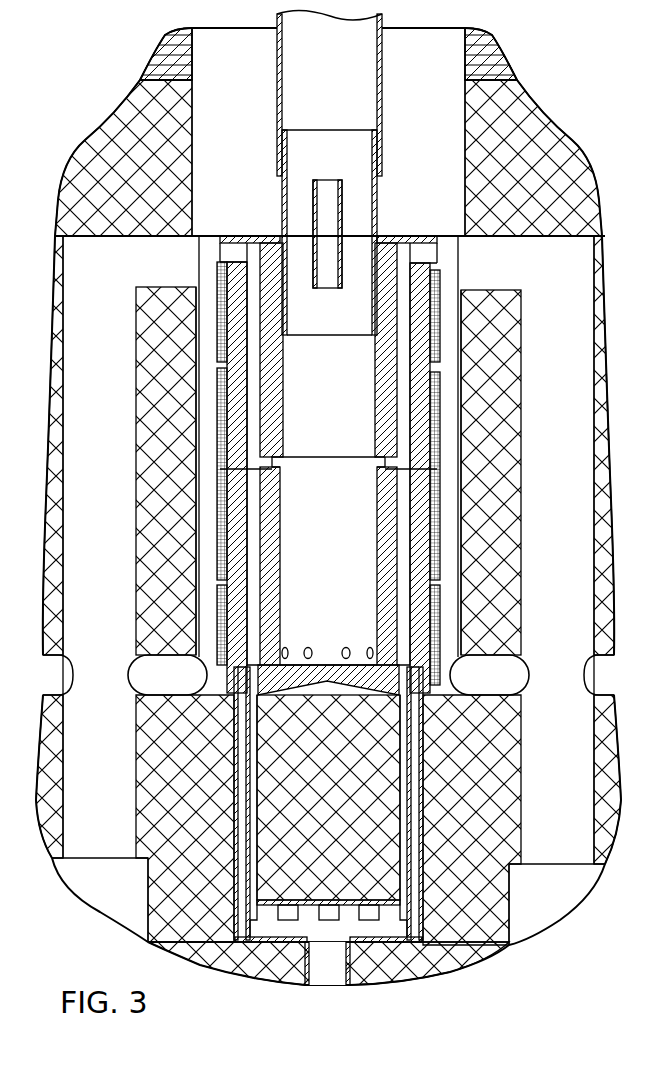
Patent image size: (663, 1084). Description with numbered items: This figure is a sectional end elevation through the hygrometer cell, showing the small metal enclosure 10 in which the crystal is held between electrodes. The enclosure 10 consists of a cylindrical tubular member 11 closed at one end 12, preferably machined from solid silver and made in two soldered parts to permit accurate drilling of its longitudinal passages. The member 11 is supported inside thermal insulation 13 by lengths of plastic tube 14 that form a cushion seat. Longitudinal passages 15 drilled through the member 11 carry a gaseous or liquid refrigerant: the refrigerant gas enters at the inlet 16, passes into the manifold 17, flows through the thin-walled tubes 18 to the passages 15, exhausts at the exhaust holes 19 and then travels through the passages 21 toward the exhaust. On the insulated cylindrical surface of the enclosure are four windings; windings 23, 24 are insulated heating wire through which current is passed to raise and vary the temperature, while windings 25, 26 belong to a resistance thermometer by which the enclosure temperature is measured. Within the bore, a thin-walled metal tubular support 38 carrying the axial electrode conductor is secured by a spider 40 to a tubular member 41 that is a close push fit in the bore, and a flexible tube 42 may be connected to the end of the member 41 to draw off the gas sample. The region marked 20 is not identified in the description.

The metal enclosure 10 is at (343, 567).
The cylindrical tubular member 11 is at (378, 363).
The closed end 12 is at (272, 684).
The thermal insulation 13 is at (328, 800).
The plastic tube 14 is at (193, 623).
The longitudinal passages 15 is at (403, 285).
The refrigerant gas inlet 16 is at (328, 975).
The manifold 17 is at (250, 928).
The thin-walled tubes 18 is at (242, 772).
The exhaust holes 19 is at (233, 246).
The insulation block 20 is at (205, 367).
The passages 21 is at (112, 413).
The heating winding 23 is at (218, 617).
The heating winding 24 is at (218, 413).
The resistance thermometer winding 25 is at (218, 525).
The resistance thermometer winding 26 is at (218, 328).
The metal tubular support 38 is at (342, 183).
The spider 40 is at (342, 243).
The tubular member 41 is at (287, 172).
The flexible tube 42 is at (283, 82).